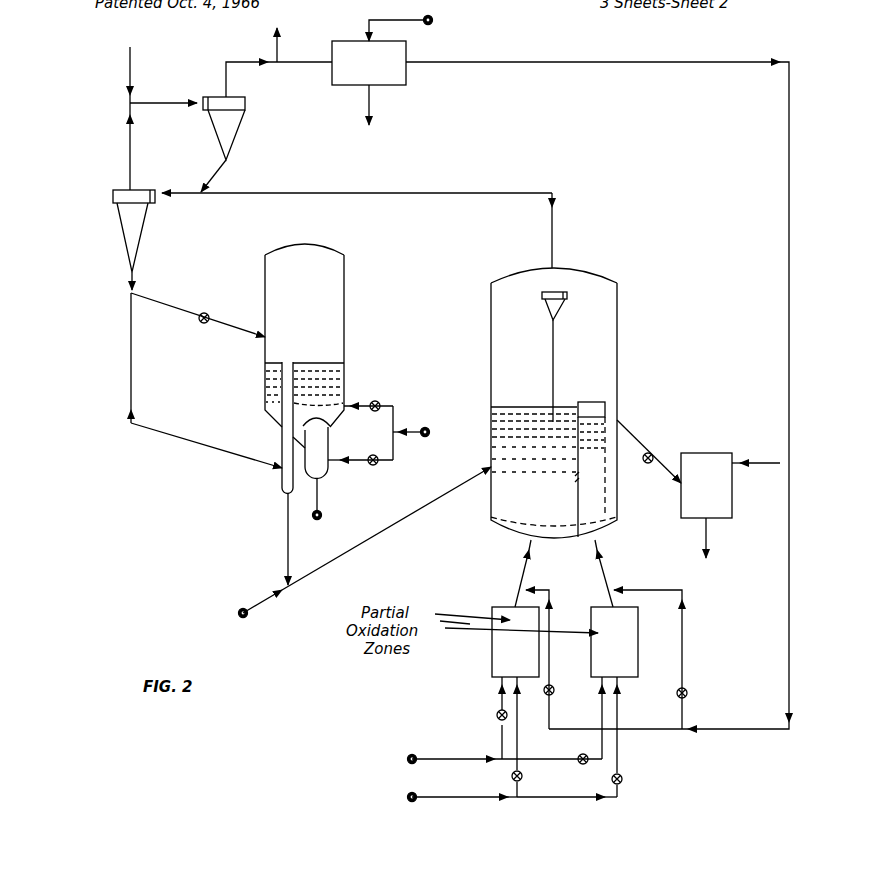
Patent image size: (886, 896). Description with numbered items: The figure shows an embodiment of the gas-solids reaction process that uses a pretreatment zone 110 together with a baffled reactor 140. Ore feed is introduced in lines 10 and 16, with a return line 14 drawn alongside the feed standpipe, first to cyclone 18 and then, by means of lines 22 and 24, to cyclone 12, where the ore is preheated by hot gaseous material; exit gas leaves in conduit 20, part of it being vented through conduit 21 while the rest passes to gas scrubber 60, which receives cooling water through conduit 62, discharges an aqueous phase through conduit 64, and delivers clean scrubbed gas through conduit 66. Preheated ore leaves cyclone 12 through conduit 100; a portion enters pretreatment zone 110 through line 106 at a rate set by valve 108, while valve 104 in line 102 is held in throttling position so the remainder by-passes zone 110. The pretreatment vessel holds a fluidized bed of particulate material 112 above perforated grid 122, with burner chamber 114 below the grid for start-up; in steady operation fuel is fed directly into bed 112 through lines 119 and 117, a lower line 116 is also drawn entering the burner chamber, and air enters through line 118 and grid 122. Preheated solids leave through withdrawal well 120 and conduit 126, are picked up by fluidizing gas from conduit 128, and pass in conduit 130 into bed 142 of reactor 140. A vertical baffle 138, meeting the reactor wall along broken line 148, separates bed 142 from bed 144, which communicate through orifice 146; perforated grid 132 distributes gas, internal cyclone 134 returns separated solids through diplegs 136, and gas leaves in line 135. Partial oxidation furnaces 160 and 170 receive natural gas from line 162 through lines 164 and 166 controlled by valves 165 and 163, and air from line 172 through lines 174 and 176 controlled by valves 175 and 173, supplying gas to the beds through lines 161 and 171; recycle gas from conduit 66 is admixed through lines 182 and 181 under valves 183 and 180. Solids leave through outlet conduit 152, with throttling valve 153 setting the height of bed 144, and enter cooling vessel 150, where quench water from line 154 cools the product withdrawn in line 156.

The line 10 is at (126, 68).
The cyclone 12 is at (115, 217).
The recycle line 14 is at (128, 148).
The line 16 is at (171, 104).
The cyclone 18 is at (246, 120).
The conduit 20 is at (226, 65).
The conduit 21 is at (278, 46).
The line 22 is at (212, 173).
The line 24 is at (180, 194).
The gas scrubber 60 is at (398, 86).
The conduit 62 is at (366, 24).
The conduit 64 is at (366, 102).
The conduit 66 is at (696, 60).
The conduit 100 is at (129, 262).
The line 102 is at (129, 370).
The valve 104 is at (200, 453).
The line 106 is at (178, 305).
The valve 108 is at (201, 322).
The pretreatment zone 110 is at (345, 283).
The fluidized bed of solid particulate material 112 is at (316, 360).
The burner chamber 114 is at (330, 450).
The lower gas line 116 is at (370, 464).
The line 117 is at (393, 400).
The line 118 is at (320, 497).
The line 119 is at (416, 438).
The withdrawal well 120 is at (278, 482).
The perforated grid 122 is at (320, 403).
The conduit 126 is at (286, 538).
The conduit 128 is at (260, 602).
The conduit 130 is at (401, 530).
The perforated grid 132 is at (527, 505).
The internal cyclone 134 is at (561, 315).
The line 135 is at (554, 216).
The diplegs 136 is at (554, 358).
The vertical baffle 138 is at (577, 402).
The baffled reactor 140 is at (618, 340).
The fluidized bed of solids 142 is at (519, 412).
The fluidized bed of solids 144 is at (600, 474).
The orifice 146 is at (574, 480).
The broken line 148 is at (606, 402).
The cooling vessel 150 is at (714, 452).
The solids outlet conduit 152 is at (652, 452).
The throttling valve 153 is at (654, 459).
The line 154 is at (762, 465).
The line 156 is at (708, 531).
The partial oxidation furnace 160 is at (515, 642).
The line 161 is at (522, 570).
The line 162 is at (436, 757).
The valve 163 is at (600, 766).
The line 164 is at (502, 737).
The valve 165 is at (498, 714).
The line 166 is at (584, 754).
The partial oxidation furnace 170 is at (614, 642).
The line 171 is at (614, 570).
The line 172 is at (432, 801).
The valve 173 is at (622, 780).
The line 174 is at (523, 782).
The valve 175 is at (525, 776).
The line 176 is at (580, 799).
The valve 180 is at (687, 691).
The line 181 is at (680, 724).
The line 182 is at (572, 720).
The valve 183 is at (555, 689).